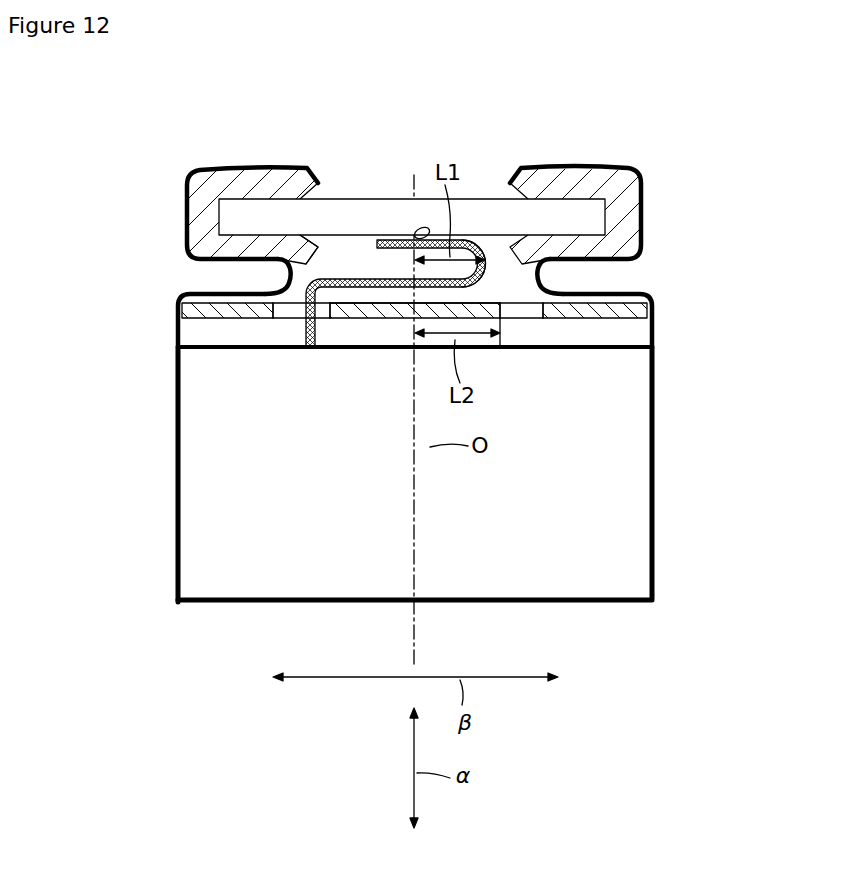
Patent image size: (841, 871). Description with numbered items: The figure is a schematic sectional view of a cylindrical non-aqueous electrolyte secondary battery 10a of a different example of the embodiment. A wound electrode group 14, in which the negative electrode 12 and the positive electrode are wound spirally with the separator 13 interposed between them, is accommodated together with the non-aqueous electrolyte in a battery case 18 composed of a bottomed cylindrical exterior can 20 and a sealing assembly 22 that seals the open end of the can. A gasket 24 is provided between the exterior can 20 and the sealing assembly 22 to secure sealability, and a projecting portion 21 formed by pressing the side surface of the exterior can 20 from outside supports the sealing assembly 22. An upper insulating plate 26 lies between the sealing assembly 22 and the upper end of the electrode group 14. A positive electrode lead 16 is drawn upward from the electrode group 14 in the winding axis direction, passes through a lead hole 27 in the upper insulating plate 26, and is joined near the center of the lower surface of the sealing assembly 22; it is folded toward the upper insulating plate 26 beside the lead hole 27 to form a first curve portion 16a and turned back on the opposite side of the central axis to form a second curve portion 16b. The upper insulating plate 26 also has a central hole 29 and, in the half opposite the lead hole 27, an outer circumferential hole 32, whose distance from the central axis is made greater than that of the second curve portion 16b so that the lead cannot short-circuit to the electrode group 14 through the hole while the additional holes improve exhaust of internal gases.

The secondary battery 10a is at (630, 125).
The negative electrode 12 is at (608, 497).
The separator 13 is at (605, 550).
The electrode group 14 is at (612, 424).
The positive electrode lead 16 is at (350, 292).
The first curve portion 16a is at (287, 258).
The second curve portion 16b is at (488, 243).
The battery case 18 is at (657, 372).
The exterior can 20 is at (178, 430).
The projecting portion 21 is at (213, 278).
The sealing assembly 22 is at (375, 198).
The gasket 24 is at (254, 175).
The upper insulating plate 26 is at (598, 300).
The lead hole 27 is at (285, 312).
The central hole 29 is at (398, 318).
The outer circumferential hole 32 is at (527, 318).